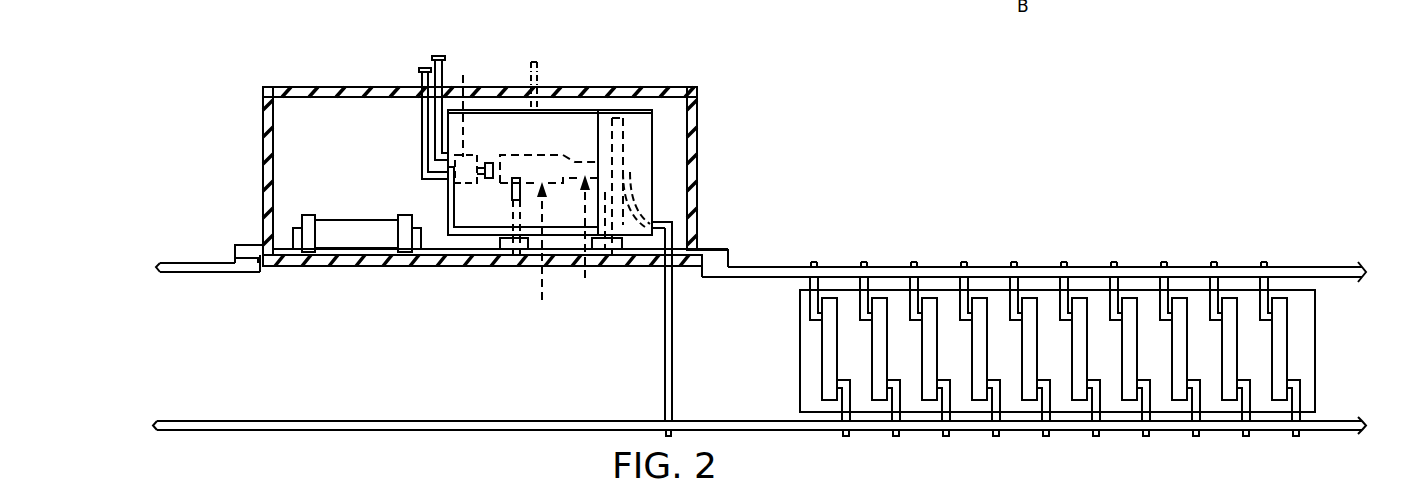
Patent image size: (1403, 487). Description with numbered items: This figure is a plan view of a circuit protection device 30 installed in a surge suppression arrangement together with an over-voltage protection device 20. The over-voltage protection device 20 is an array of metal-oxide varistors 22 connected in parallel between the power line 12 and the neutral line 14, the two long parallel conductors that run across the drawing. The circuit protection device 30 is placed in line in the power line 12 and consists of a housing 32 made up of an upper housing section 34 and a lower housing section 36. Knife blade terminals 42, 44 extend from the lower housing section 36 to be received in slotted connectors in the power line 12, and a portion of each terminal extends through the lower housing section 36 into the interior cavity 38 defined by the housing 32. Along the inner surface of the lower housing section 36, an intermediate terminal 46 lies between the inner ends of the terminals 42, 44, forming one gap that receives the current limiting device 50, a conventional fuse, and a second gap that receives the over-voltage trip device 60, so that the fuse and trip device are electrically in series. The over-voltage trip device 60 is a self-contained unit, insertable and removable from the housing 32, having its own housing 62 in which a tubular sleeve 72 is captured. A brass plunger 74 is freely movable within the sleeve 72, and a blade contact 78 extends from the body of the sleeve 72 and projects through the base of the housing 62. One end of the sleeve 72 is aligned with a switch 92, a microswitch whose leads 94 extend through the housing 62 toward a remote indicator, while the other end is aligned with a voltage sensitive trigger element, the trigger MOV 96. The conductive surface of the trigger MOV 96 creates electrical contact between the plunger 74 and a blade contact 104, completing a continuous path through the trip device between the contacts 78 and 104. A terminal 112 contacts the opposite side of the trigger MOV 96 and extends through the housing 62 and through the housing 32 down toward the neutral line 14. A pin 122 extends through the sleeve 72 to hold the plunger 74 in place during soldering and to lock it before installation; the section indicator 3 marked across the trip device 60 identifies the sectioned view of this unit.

The power line 12 is at (205, 273).
The neutral line 14 is at (383, 426).
The over-voltage protection device 20 is at (1095, 318).
The metal-oxide varistors 22 is at (1180, 308).
The circuit protection device 30 is at (663, 51).
The housing 32 is at (255, 129).
The upper housing section 34 is at (301, 90).
The lower housing section 36 is at (363, 268).
The interior cavity 38 is at (333, 151).
The knife blade terminal 42 is at (241, 246).
The knife blade terminal 44 is at (729, 248).
The intermediate terminal 46 is at (455, 252).
The current limiting device 50 is at (348, 230).
The over-voltage trip device 60 is at (589, 104).
The housing 62 is at (557, 100).
The tubular sleeve 72 is at (542, 255).
The plunger 74 is at (589, 239).
The blade contact 78 is at (517, 255).
The switch 92 is at (466, 105).
The tubes 94 is at (437, 58).
The trigger MOV 96 is at (619, 129).
The blade contact 104 is at (609, 248).
The terminal 112 is at (672, 358).
The pin 122 is at (530, 70).
The section line for FIG. 3 is at (456, 167).